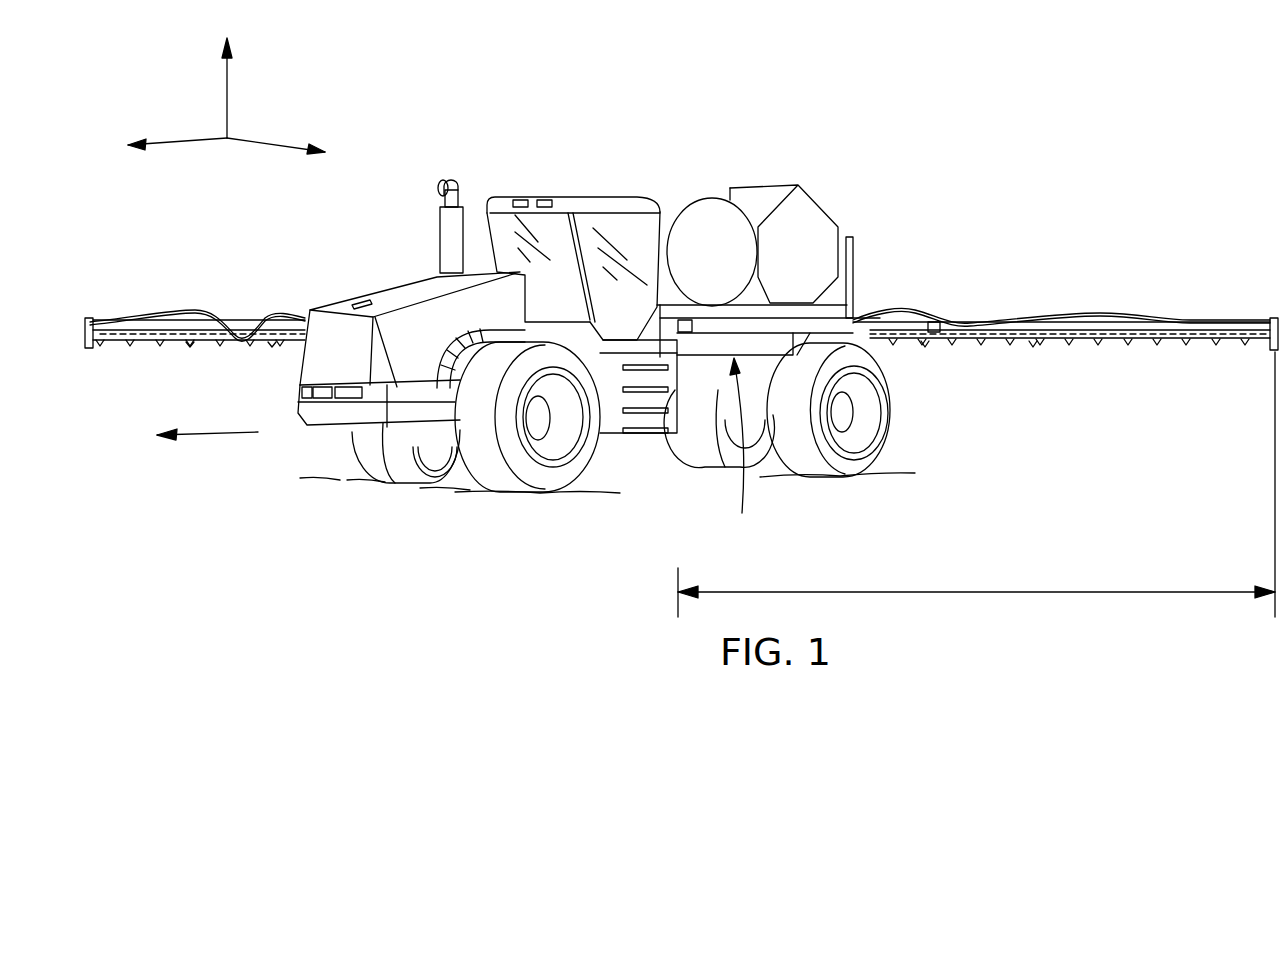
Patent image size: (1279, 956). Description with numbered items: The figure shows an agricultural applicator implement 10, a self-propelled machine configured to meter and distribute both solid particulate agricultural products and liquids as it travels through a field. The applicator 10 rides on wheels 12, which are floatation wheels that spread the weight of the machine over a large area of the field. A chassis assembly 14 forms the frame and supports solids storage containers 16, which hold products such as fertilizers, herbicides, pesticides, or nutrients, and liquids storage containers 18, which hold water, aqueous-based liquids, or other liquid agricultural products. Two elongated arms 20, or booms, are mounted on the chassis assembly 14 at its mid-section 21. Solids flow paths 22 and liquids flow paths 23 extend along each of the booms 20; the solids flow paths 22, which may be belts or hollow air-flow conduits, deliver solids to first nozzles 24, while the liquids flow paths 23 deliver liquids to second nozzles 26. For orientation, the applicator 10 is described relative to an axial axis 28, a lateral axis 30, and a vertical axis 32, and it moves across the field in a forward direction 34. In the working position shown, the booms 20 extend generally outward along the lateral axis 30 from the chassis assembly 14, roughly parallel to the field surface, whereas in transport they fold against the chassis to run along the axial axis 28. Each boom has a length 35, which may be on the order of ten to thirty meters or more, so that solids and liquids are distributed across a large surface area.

The agricultural applicator implement 10 is at (605, 135).
The wheels 12 is at (365, 445).
The chassis assembly 14 is at (813, 217).
The solids storage containers 16 is at (762, 357).
The liquids storage containers 18 is at (712, 196).
The elongated arms 20 is at (243, 318).
The mid-section 21 is at (741, 452).
The solids flow paths 22 is at (193, 313).
The liquids flow paths 23 is at (272, 343).
The first nozzles 24 is at (160, 343).
The second nozzles 26 is at (192, 345).
The axial axis 28 is at (183, 145).
The lateral axis 30 is at (272, 148).
The vertical axis 32 is at (226, 92).
The forward direction 34 is at (210, 440).
The length 35 is at (982, 590).